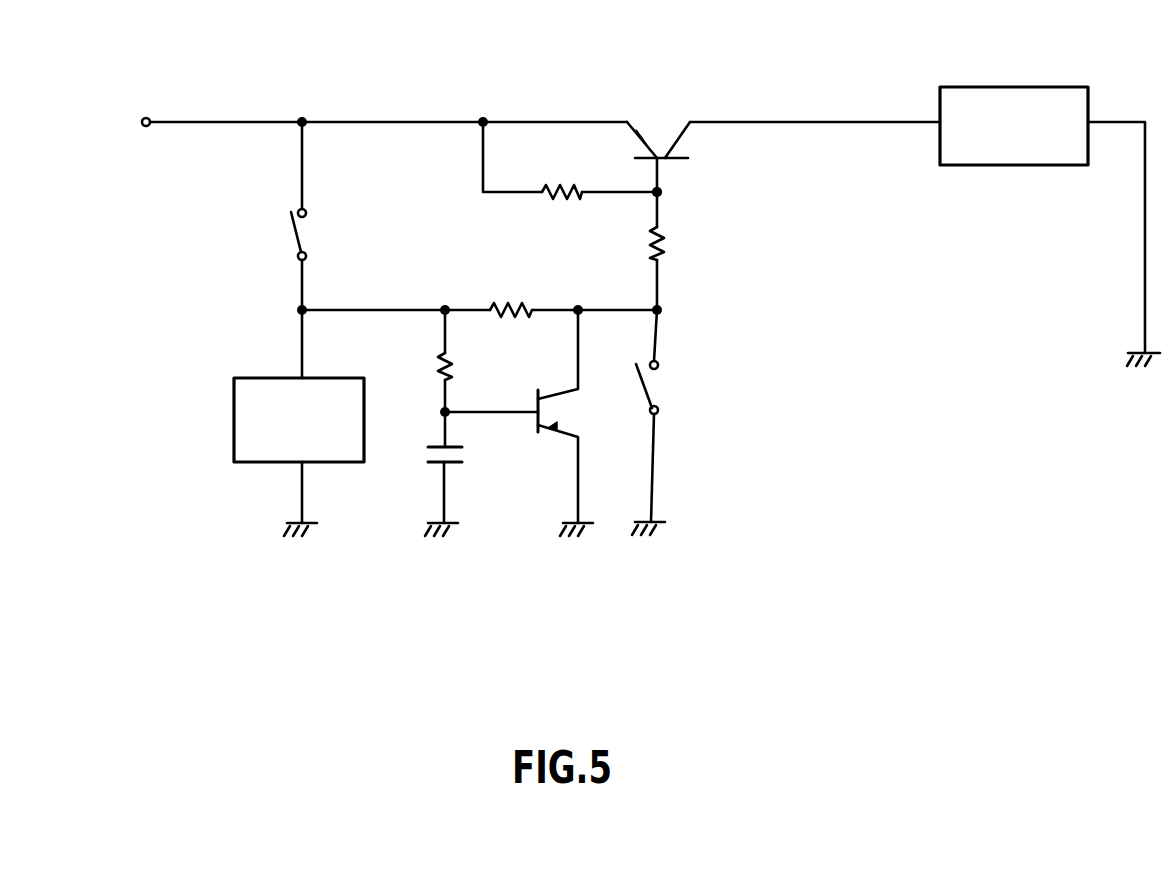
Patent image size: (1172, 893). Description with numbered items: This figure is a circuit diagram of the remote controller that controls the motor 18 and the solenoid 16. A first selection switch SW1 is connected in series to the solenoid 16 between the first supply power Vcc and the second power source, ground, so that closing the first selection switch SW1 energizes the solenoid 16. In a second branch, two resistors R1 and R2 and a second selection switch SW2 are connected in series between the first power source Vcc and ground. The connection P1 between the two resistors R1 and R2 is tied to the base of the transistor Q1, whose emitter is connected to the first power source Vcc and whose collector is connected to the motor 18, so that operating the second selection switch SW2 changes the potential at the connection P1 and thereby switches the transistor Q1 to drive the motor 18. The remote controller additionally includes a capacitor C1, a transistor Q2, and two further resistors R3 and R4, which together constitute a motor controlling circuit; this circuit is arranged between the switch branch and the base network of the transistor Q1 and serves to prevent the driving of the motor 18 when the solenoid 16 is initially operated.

The solenoid 16 is at (234, 440).
The motor 18 is at (1046, 87).
The first selection switch SW1 is at (260, 250).
The second selection switch SW2 is at (676, 422).
The resistor R1 is at (570, 160).
The resistor R2 is at (676, 251).
The resistor R3 is at (463, 361).
The resistor R4 is at (479, 298).
The transistor Q1 is at (658, 144).
The transistor Q2 is at (522, 423).
The capacitor C1 is at (460, 474).
The connection P1 is at (657, 192).
The first power source Vcc is at (371, 105).